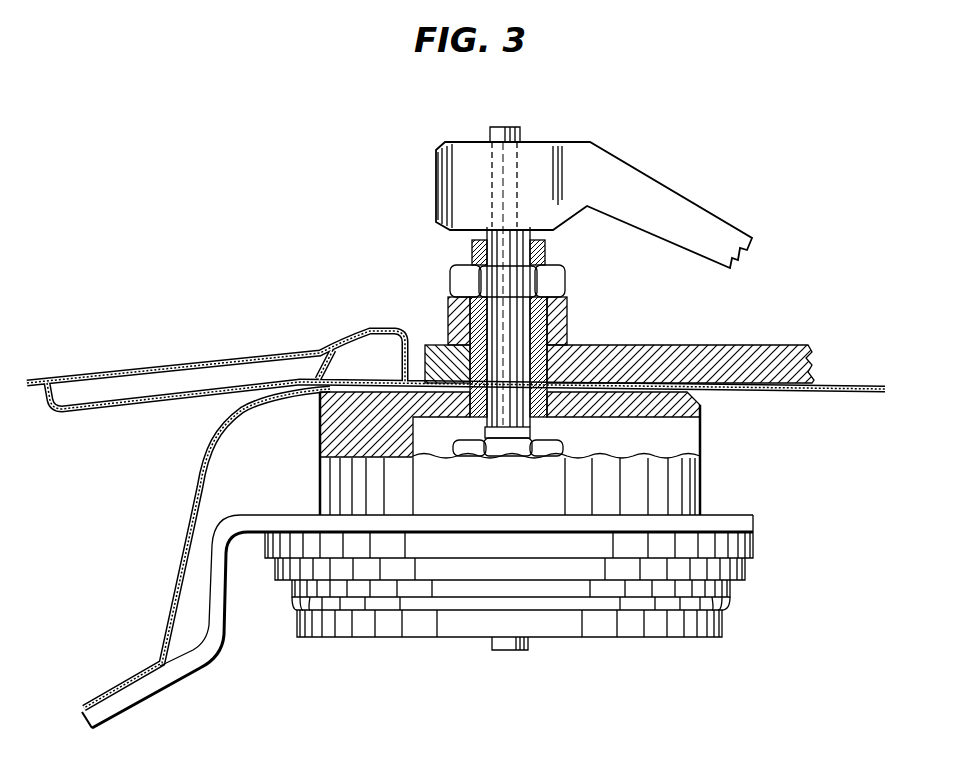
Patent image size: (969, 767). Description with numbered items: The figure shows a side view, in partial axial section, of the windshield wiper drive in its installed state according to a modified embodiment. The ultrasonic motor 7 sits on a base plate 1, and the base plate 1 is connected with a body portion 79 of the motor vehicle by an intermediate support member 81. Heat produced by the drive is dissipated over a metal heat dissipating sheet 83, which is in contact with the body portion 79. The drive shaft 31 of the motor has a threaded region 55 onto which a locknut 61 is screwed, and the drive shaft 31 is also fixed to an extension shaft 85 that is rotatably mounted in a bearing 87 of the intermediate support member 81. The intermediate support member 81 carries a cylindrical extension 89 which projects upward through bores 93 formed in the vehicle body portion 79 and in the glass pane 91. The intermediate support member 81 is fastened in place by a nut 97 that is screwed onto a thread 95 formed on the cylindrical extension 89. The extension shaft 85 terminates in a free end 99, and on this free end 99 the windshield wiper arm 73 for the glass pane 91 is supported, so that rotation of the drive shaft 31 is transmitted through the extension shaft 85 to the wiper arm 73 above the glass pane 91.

The base plate 1 is at (742, 542).
The ultrasonic motor 7 is at (757, 575).
The drive shaft 31 is at (503, 651).
The threaded region 55 is at (533, 431).
The locknut 61 is at (552, 450).
The windshield wiper arm 73 is at (622, 172).
The body portion 79 is at (186, 524).
The intermediate support member 81 is at (694, 400).
The heat dissipating sheet 83 is at (193, 668).
The extension shaft 85 is at (536, 308).
The bearing 87 is at (527, 362).
The cylindrical extension 89 is at (455, 320).
The glass pane 91 is at (712, 356).
The bores 93 is at (445, 345).
The thread 95 is at (456, 292).
The nut 97 is at (462, 266).
The free end 99 is at (510, 127).